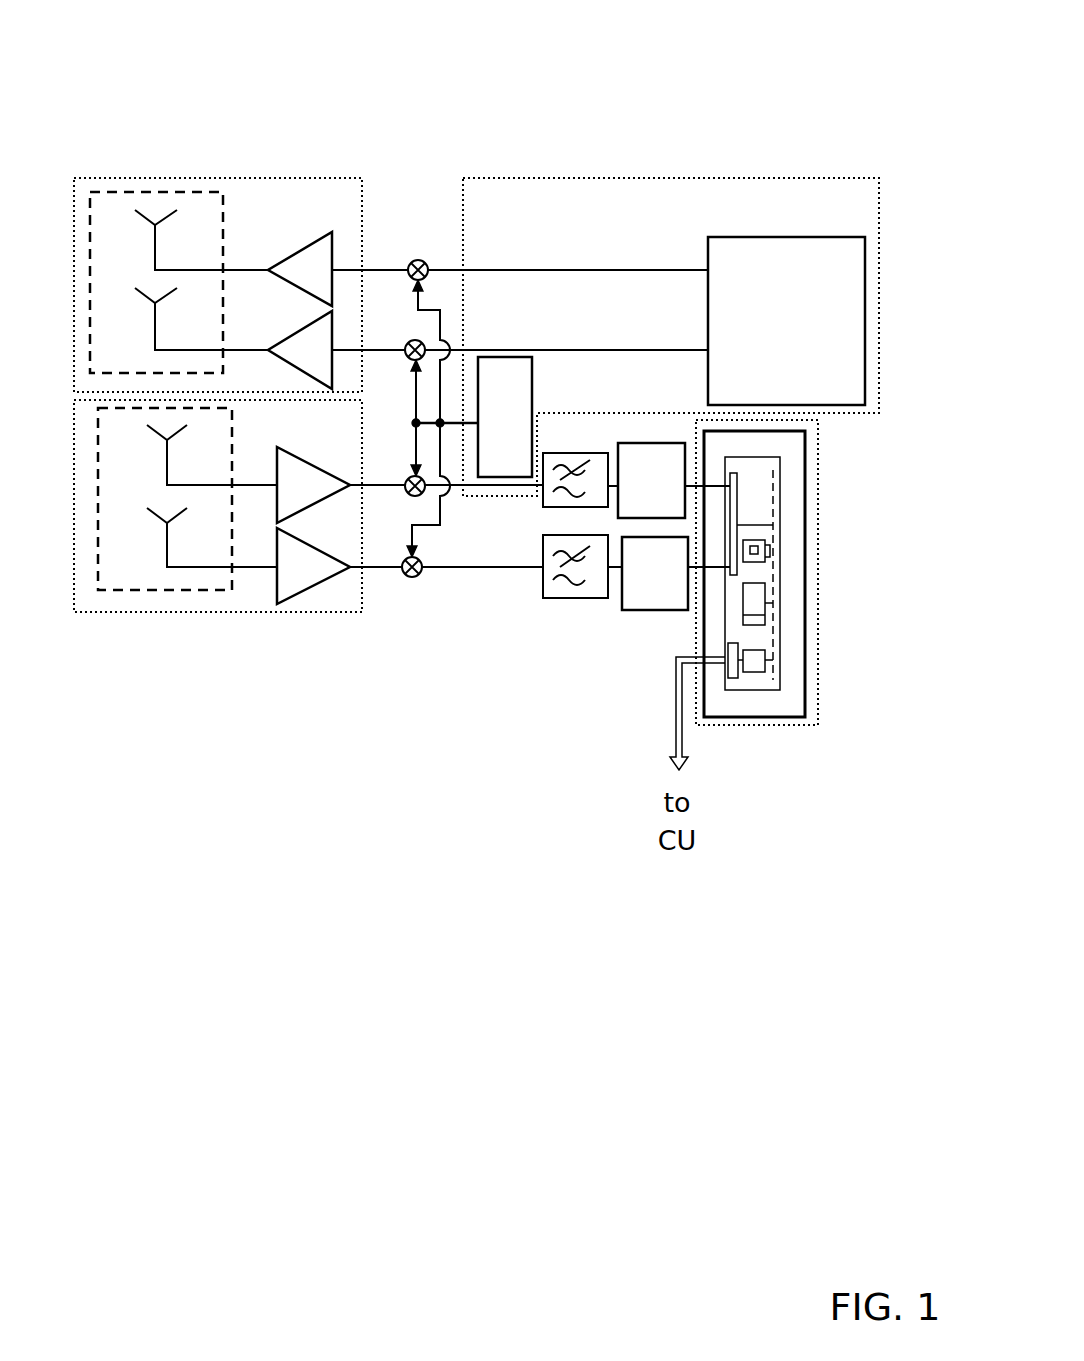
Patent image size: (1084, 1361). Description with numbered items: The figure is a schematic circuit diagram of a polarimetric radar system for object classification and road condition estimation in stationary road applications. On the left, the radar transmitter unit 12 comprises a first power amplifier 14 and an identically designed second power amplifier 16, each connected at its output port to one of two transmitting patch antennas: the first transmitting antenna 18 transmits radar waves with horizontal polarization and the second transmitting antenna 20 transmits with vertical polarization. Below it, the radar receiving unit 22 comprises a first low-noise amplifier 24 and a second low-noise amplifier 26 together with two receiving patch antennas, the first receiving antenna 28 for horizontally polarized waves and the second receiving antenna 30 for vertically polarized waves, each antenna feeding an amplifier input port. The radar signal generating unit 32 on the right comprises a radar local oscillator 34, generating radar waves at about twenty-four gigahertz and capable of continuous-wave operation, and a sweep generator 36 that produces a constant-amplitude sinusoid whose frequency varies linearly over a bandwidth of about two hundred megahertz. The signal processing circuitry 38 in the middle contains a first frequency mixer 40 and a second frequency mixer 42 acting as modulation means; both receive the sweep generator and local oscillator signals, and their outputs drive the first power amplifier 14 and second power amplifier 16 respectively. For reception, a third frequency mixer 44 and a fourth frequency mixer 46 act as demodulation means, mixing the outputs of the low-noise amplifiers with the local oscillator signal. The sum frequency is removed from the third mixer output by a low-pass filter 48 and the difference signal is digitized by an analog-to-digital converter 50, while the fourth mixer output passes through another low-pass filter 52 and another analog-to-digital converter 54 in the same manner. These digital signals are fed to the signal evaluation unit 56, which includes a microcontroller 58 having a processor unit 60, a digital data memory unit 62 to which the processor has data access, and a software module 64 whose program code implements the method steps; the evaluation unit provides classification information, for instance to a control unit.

The radar transmitter unit 12 is at (172, 178).
The first power amplifier 14 is at (327, 279).
The second power amplifier 16 is at (327, 359).
The first transmitting antenna 18 is at (152, 245).
The second transmitting antenna 20 is at (152, 323).
The radar receiving unit 22 is at (137, 613).
The first low-noise amplifier 24 is at (313, 496).
The second low-noise amplifier 26 is at (313, 578).
The first receiving antenna 28 is at (165, 455).
The second receiving antenna 30 is at (165, 540).
The radar signal generating unit 32 is at (623, 178).
The radar local oscillator 34 is at (520, 432).
The sweep generator 36 is at (803, 330).
The signal processing circuitry 38 is at (424, 655).
The first frequency mixer 40 is at (410, 262).
The second frequency mixer 42 is at (410, 343).
The third frequency mixer 44 is at (412, 473).
The fourth frequency mixer 46 is at (408, 580).
The low-pass filter 48 is at (542, 502).
The analog-to-digital converter 50 is at (666, 495).
The low-pass filter 52 is at (540, 583).
The analog-to-digital converter 54 is at (670, 585).
The signal evaluation unit 56 is at (752, 727).
The microcontroller 58 is at (782, 657).
The processor unit 60 is at (763, 545).
The digital data memory unit 62 is at (742, 607).
The software module 64 is at (742, 607).